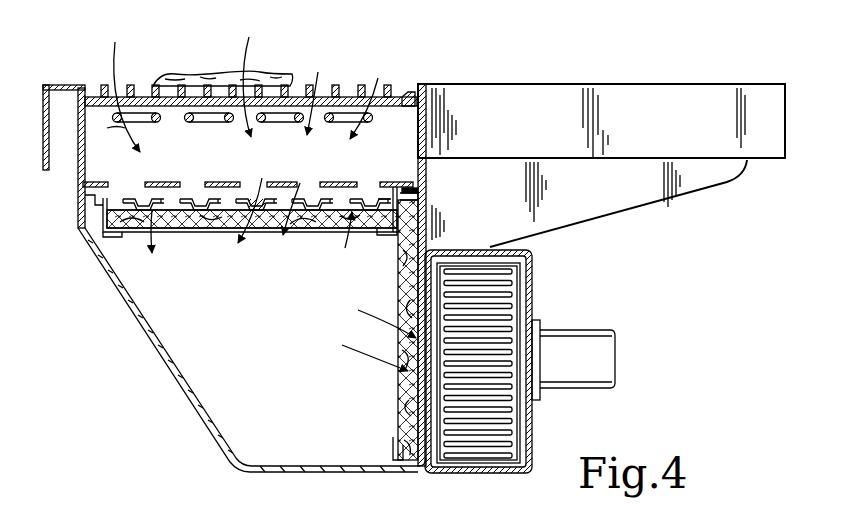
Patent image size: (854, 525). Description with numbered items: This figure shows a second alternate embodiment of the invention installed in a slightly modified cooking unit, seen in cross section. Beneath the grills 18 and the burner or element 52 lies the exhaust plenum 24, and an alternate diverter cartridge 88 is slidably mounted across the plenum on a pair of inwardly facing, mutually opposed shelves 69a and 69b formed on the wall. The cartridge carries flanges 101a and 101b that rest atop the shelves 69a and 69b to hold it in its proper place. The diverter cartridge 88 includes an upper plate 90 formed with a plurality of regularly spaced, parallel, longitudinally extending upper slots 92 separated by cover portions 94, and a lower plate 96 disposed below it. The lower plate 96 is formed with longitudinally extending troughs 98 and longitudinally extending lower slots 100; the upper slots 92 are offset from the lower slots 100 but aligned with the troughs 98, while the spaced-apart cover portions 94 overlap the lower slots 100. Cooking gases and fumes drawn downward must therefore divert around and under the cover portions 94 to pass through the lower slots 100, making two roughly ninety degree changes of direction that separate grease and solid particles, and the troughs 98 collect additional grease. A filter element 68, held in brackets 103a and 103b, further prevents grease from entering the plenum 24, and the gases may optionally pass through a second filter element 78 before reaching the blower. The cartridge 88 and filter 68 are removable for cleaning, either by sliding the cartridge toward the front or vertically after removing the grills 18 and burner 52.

The grills 18 is at (341, 77).
The exhaust plenum 24 is at (188, 378).
The burner or element 52 is at (329, 130).
The filter element 68 is at (283, 230).
The shelf 69a is at (93, 207).
The shelf 69b is at (414, 193).
The second filter element 78 is at (395, 420).
The diverter cartridge 88 is at (128, 177).
The upper plate 90 is at (398, 179).
The upper slots 92 is at (374, 183).
The cover portions 94 is at (221, 173).
The lower plate 96 is at (323, 215).
The troughs 98 is at (253, 191).
The lower slots 100 is at (160, 208).
The flange 101a is at (96, 170).
The flange 101b is at (411, 184).
The bracket 103a is at (113, 237).
The bracket 103b is at (385, 230).